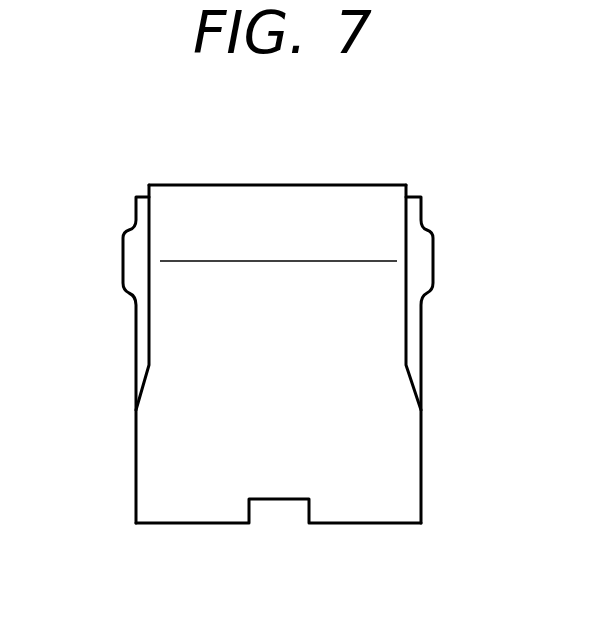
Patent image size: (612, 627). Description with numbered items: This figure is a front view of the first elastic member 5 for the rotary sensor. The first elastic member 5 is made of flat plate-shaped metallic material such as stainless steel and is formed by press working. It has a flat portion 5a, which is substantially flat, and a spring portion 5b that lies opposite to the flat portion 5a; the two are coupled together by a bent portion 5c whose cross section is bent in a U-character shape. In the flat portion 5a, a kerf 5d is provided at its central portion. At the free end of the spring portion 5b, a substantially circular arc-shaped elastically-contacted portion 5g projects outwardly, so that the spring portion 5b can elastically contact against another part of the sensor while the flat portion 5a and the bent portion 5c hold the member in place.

The first elastic member 5 is at (458, 196).
The flat portion 5a is at (122, 252).
The spring portion 5b is at (157, 461).
The bent portion 5c is at (378, 525).
The kerf 5d is at (280, 513).
The elastically-contacted portion 5g is at (309, 205).